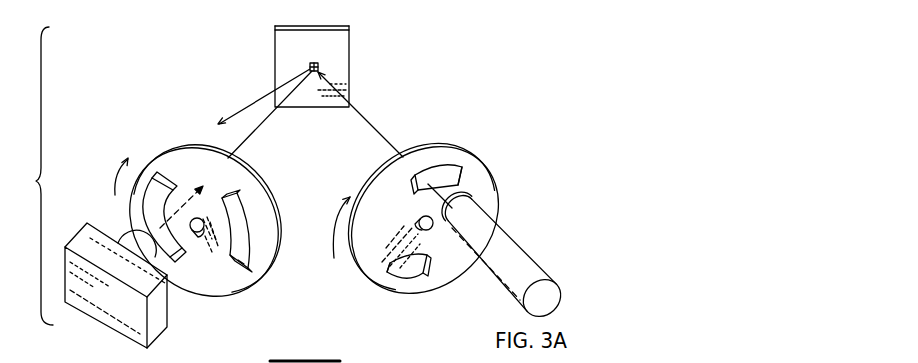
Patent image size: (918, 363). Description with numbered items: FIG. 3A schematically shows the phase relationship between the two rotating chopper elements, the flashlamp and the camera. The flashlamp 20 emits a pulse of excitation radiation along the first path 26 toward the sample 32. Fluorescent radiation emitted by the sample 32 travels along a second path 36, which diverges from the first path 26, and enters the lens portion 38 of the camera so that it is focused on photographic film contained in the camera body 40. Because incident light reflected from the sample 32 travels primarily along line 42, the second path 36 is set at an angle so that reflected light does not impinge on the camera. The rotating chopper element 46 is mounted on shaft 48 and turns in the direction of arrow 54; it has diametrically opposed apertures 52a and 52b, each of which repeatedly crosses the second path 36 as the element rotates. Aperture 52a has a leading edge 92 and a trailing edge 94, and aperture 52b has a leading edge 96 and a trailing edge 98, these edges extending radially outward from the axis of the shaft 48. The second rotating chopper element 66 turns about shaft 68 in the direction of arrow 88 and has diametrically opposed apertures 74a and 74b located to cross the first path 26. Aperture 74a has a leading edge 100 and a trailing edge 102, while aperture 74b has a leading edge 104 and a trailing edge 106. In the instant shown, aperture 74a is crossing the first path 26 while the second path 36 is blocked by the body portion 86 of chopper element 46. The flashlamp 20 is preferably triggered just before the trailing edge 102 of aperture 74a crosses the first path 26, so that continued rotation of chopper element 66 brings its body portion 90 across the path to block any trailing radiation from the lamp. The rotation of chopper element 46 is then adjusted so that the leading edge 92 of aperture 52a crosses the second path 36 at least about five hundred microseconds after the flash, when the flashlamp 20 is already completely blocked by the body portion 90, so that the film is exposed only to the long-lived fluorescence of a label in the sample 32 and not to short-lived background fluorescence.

The flashlamp 20 is at (502, 249).
The first path 26 is at (350, 107).
The sample 32 is at (320, 67).
The second path 36 is at (274, 108).
The lens portion 38 is at (111, 217).
The camera body 40 is at (112, 290).
The line of reflected light 42 is at (240, 107).
The rotating chopper element 46 is at (205, 199).
The shaft 48 is at (204, 248).
The aperture 52a is at (153, 176).
The aperture 52b is at (247, 268).
The arrow 54 is at (127, 165).
The rotating chopper element 66 is at (433, 218).
The shaft 68 is at (419, 221).
The aperture 74a is at (450, 175).
The aperture 74b is at (407, 272).
The body portion 86 is at (228, 198).
The arrow 88 is at (346, 215).
The body portion 90 is at (398, 183).
The leading edge 92 is at (189, 182).
The trailing edge 94 is at (176, 259).
The leading edge 96 is at (230, 256).
The trailing edge 98 is at (243, 214).
The leading edge 100 is at (468, 180).
The trailing edge 102 is at (423, 178).
The leading edge 104 is at (393, 277).
The trailing edge 106 is at (424, 274).